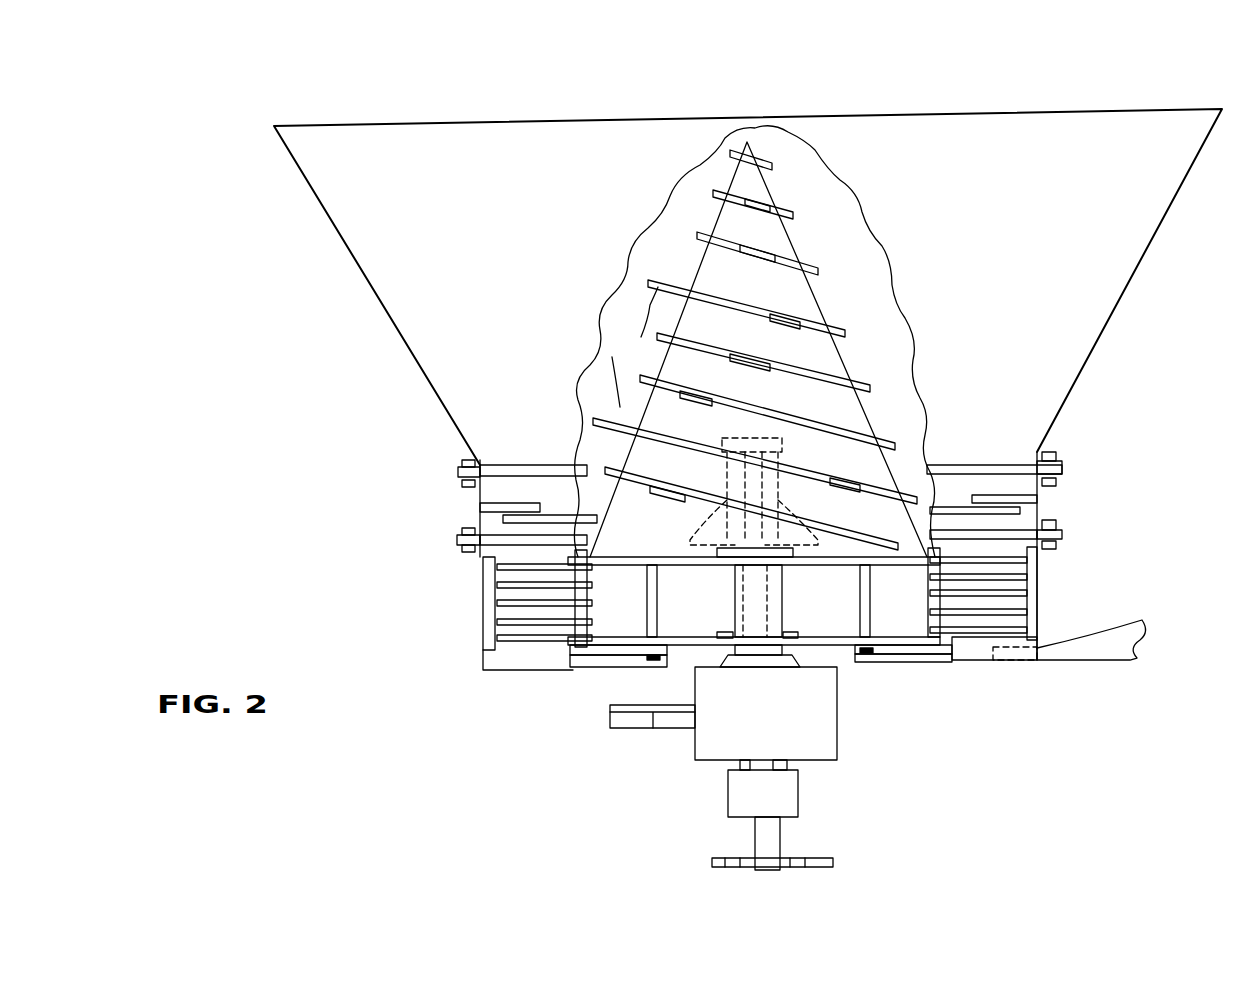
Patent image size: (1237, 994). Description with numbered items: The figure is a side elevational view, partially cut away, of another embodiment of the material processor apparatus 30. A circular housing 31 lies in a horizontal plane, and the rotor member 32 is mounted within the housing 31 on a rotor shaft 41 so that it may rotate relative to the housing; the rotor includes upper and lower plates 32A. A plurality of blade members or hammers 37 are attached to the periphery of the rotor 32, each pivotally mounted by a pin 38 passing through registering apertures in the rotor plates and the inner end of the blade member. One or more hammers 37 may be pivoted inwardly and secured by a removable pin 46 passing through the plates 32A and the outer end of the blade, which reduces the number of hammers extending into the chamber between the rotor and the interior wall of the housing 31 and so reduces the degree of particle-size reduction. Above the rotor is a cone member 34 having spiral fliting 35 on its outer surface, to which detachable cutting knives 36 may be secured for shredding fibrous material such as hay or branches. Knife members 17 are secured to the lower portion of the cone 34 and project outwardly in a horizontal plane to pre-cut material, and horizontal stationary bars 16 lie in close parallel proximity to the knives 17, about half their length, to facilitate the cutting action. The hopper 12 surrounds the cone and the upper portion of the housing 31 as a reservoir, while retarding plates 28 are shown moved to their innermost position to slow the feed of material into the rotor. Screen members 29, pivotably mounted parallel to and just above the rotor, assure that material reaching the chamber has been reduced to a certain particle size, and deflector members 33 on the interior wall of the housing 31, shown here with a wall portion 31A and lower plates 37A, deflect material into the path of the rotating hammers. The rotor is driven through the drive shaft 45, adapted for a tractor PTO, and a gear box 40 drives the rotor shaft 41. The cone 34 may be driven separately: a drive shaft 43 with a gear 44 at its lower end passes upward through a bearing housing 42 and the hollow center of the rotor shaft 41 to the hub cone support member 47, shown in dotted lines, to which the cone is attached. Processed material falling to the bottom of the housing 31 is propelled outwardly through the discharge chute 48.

The hopper 12 is at (1122, 262).
The stationary bars 16 is at (466, 490).
The knife members 17 is at (503, 519).
The retarding plates 28 is at (520, 463).
The screen member 29 is at (1040, 560).
The apparatus 30 is at (932, 70).
The circular housing 31 is at (1020, 675).
The housing wall 31A is at (1052, 497).
The rotor member 32 is at (615, 545).
The upper and lower plates 32A is at (897, 637).
The deflector members 33 is at (485, 625).
The cone member 34 is at (858, 345).
The spiral fliting 35 is at (815, 272).
The cutting knives 36 is at (657, 343).
The blade members 37 is at (580, 620).
The lower plates 37A is at (595, 662).
The pin 38 is at (587, 624).
The gear box 40 is at (832, 732).
The rotor shaft 41 is at (773, 593).
The bearing housing 42 is at (792, 795).
The drive shaft 43 is at (775, 830).
The gear 44 is at (712, 862).
The drive shaft 45 is at (650, 712).
The pin 46 is at (655, 618).
The hub cone support member 47 is at (782, 450).
The discharge chute 48 is at (1120, 650).